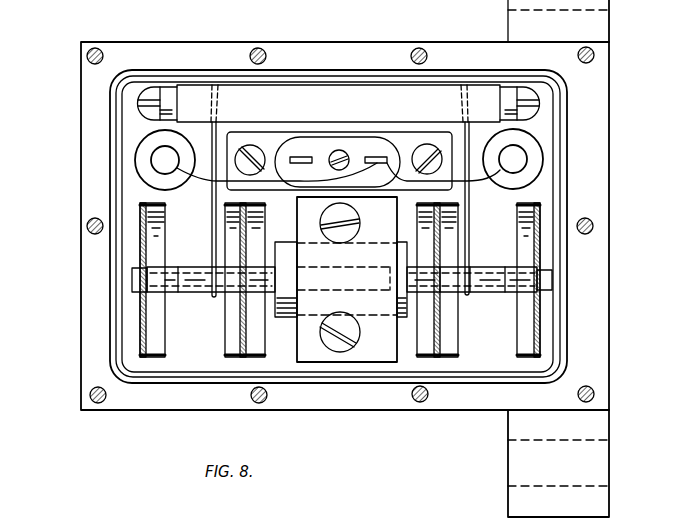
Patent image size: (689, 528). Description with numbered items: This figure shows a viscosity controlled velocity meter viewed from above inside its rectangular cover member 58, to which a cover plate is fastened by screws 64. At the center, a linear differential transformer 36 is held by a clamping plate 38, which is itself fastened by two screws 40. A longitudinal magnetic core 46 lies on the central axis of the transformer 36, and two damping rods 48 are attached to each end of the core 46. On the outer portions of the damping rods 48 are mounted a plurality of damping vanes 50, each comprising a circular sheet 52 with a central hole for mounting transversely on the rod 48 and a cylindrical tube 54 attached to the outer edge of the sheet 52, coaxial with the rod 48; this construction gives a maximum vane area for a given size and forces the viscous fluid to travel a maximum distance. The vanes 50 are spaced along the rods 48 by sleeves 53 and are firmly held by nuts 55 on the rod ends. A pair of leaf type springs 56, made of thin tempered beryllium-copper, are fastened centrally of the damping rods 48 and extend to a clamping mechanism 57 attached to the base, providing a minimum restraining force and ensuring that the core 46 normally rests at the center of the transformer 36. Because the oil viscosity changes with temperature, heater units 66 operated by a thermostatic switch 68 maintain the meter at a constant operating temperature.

The linear differential transformer 36 is at (287, 318).
The clamping plate 38 is at (347, 300).
The screws 40 is at (346, 217).
The magnetic core 46 is at (348, 276).
The damping rods 48 is at (186, 297).
The damping vanes 50 is at (228, 334).
The circular sheet 52 is at (543, 313).
The sleeves 53 is at (342, 284).
The cylindrical tube 54 is at (532, 352).
The nuts 55 is at (132, 284).
The leaf type springs 56 is at (212, 232).
The clamping mechanism 57 is at (268, 109).
The rectangular cover member 58 is at (84, 275).
The screws 64 is at (594, 224).
The heater units 66 is at (137, 153).
The thermostatic switch 68 is at (325, 144).